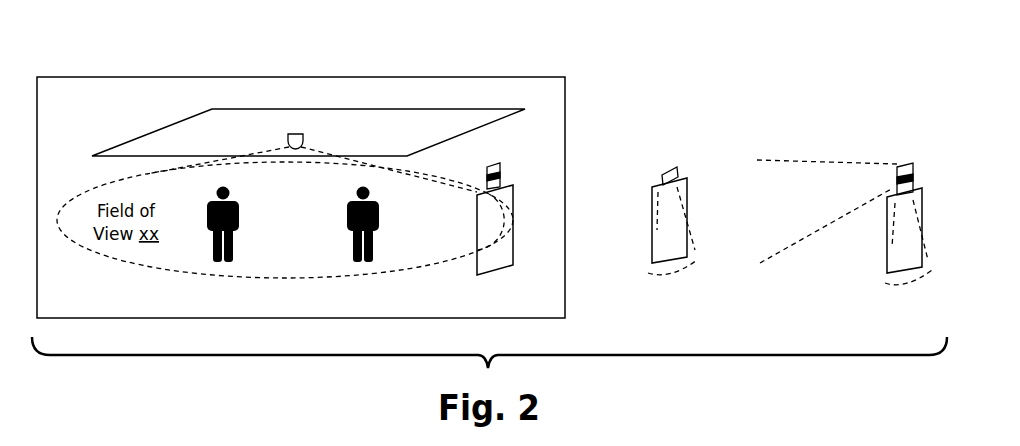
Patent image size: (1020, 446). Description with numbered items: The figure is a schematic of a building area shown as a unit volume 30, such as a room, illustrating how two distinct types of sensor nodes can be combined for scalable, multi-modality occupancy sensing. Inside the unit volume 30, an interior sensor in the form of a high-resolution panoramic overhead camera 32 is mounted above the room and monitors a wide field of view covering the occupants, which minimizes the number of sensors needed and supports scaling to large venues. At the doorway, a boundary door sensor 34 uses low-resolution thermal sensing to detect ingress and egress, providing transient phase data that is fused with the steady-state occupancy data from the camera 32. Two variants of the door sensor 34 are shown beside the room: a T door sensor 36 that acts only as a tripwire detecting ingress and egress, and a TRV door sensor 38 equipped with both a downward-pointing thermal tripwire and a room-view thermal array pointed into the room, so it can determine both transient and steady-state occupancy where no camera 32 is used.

The unit volume 30 is at (301, 197).
The high-resolution panoramic overhead camera 32 is at (285, 197).
The door sensor 34 is at (511, 206).
The T door sensor 36 is at (670, 174).
The TRV door sensor 38 is at (847, 179).